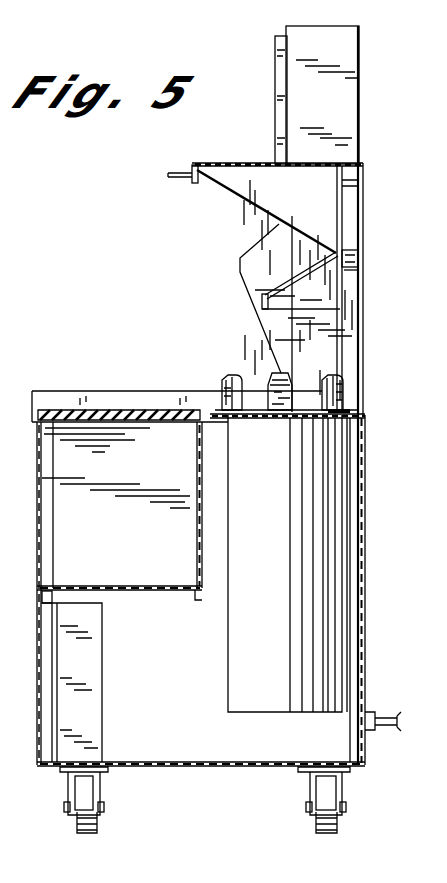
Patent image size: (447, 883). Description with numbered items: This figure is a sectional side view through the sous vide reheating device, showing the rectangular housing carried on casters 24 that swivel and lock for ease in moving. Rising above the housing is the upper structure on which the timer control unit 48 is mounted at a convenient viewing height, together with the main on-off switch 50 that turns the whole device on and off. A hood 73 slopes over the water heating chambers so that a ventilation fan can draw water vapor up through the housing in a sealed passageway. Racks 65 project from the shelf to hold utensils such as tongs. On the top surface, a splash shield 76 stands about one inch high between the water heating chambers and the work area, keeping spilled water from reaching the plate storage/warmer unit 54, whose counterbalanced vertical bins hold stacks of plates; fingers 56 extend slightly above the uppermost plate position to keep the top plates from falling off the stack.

The casters 24 is at (103, 793).
The timer control unit 48 is at (277, 72).
The main on-off switch 50 is at (286, 125).
The plate storage/warmer unit 54 is at (252, 388).
The fingers 56 is at (227, 382).
The racks 65 is at (178, 172).
The hood 73 is at (252, 243).
The splash shield 76 is at (103, 398).